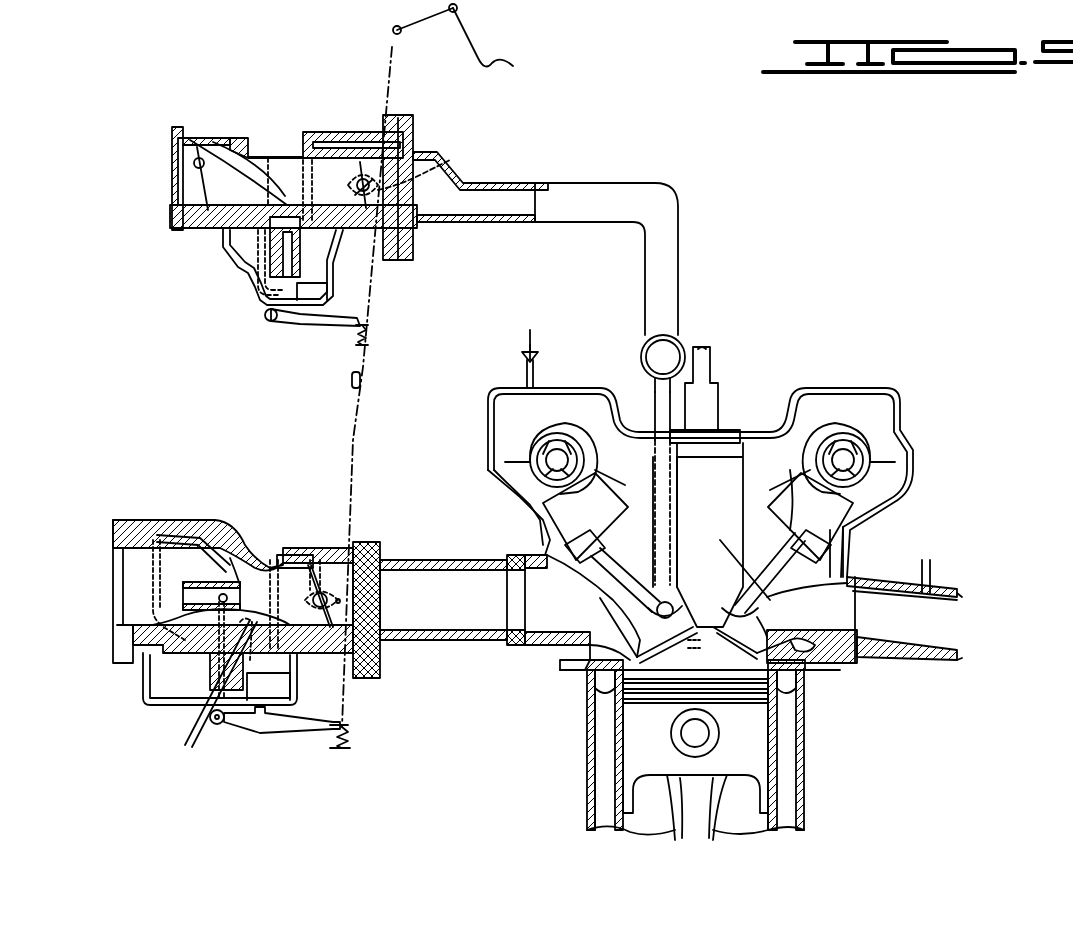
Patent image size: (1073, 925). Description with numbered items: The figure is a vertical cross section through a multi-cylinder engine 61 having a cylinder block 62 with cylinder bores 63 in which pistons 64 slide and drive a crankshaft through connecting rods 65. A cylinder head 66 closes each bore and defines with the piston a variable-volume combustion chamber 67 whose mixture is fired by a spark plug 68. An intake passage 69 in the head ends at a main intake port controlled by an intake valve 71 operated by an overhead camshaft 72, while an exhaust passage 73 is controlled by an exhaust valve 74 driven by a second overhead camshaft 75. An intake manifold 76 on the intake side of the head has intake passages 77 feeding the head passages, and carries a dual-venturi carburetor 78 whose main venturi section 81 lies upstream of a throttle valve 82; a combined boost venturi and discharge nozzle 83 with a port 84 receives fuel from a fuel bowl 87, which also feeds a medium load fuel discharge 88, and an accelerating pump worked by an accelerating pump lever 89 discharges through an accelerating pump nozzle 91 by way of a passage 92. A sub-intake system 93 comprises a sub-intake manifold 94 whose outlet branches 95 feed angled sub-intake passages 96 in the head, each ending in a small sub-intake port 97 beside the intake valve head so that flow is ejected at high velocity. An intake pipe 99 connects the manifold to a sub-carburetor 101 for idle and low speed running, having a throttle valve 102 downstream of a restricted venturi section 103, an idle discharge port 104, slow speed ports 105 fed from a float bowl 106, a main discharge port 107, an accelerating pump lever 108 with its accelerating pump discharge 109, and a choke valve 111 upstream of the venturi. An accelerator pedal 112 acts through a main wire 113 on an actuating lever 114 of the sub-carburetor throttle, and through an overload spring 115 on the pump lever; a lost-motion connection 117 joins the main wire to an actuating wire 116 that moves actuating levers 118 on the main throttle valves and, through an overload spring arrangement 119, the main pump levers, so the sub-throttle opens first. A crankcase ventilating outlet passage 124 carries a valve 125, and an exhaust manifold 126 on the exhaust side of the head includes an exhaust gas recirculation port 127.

The engine 61 is at (906, 368).
The cylinder block 62 is at (806, 778).
The cylinder bore 63 is at (797, 786).
The piston 64 is at (640, 732).
The connecting rod 65 is at (672, 838).
The cylinder head 66 is at (846, 548).
The chamber 67 is at (745, 660).
The spark plug 68 is at (700, 590).
The intake passage 69 is at (560, 610).
The intake valve 71 is at (668, 560).
The overhead camshaft 72 is at (560, 423).
The exhaust passage 73 is at (858, 630).
The exhaust valve 74 is at (772, 601).
The camshaft 75 is at (878, 443).
The intake manifold 76 is at (431, 556).
The intake passage 77 is at (440, 650).
The carburetor 78 is at (197, 505).
The main venturi section 81 is at (195, 735).
The throttle valve 82 is at (340, 618).
The combined boost venturi and discharge nozzle 83 is at (113, 627).
The port 84 is at (242, 590).
The fuel bowl 87 is at (294, 690).
The medium load fuel discharge 88 is at (312, 555).
The accelerating pump lever 89 is at (285, 732).
The accelerating pump nozzle 91 is at (228, 572).
The passage 92 is at (172, 533).
The sub-intake system 93 is at (748, 185).
The sub-intake manifold 94 is at (692, 337).
The outlet branch 95 is at (647, 406).
The sub-intake passage 96 is at (672, 488).
The sub-intake port 97 is at (695, 605).
The intake pipe 99 is at (665, 190).
The sub-carburetor 101 is at (318, 133).
The throttle valve 102 is at (385, 205).
The restricted venturi section 103 is at (272, 157).
The idle discharge port 104 is at (400, 135).
The slow speed port 105 is at (352, 141).
The float bowl 106 is at (245, 245).
The main discharge port 107 is at (220, 150).
The accelerating pump lever 108 is at (330, 325).
The accelerating pump discharge 109 is at (240, 222).
The choke valve 111 is at (178, 197).
The accelerator pedal 112 is at (514, 66).
The main wire 113 is at (390, 46).
The actuating lever 114 is at (458, 172).
The overload spring 115 is at (370, 338).
The actuating wire 116 is at (365, 412).
The connection 117 is at (362, 378).
The actuating lever 118 is at (350, 600).
The overload spring arrangement 119 is at (352, 746).
The outlet passage 124 is at (548, 385).
The valve 125 is at (535, 345).
The exhaust manifold 126 is at (955, 600).
The exhaust gas recirculation port 127 is at (935, 580).